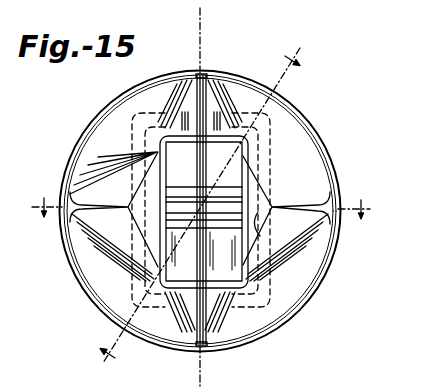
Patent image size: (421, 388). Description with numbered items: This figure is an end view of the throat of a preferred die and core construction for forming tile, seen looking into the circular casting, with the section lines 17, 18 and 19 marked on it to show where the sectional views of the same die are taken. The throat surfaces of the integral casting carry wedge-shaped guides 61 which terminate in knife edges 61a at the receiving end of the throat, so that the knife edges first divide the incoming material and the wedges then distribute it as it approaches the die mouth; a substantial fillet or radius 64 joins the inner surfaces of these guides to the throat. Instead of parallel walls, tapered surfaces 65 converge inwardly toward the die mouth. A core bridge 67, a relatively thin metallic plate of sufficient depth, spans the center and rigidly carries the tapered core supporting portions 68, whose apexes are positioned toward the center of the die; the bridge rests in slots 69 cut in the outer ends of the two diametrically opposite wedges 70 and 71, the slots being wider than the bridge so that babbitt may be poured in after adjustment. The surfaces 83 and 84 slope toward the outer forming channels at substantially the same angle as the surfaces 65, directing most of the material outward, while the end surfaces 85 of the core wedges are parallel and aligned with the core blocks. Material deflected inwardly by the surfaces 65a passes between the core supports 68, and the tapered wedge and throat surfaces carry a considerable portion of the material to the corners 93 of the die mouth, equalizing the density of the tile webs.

The section line 17— 17 is at (192, 221).
The section line 18— 18 is at (199, 45).
The section line 19— 19 is at (187, 205).
The wedge-shaped guides 61 is at (204, 101).
The knife edges 61a is at (61, 193).
The fillet or radius 64 is at (113, 167).
The tapered surfaces 65 is at (260, 232).
The deflecting surfaces 65a is at (230, 297).
The core bridge 67 is at (207, 368).
The core supporting portions 68 is at (238, 172).
The slots 69 is at (211, 72).
The wedge 70 is at (240, 335).
The wedge 71 is at (207, 72).
The sloping surface 83 is at (175, 247).
The sloping surface 84 is at (204, 211).
The end surfaces of the core wedges 85 is at (236, 160).
The corners of the die mouth 93 is at (167, 132).